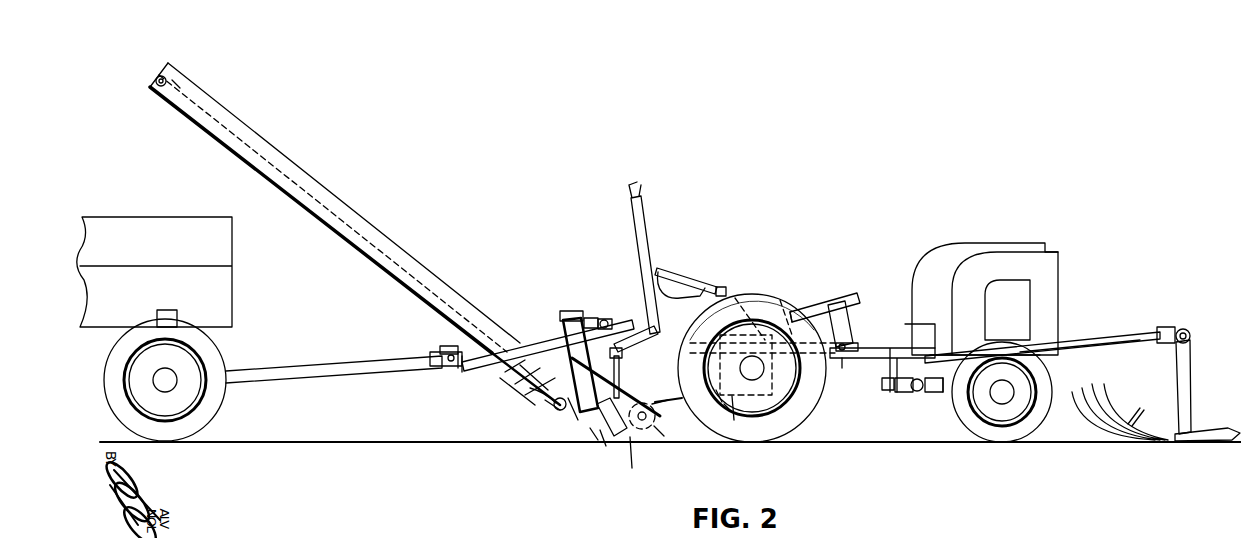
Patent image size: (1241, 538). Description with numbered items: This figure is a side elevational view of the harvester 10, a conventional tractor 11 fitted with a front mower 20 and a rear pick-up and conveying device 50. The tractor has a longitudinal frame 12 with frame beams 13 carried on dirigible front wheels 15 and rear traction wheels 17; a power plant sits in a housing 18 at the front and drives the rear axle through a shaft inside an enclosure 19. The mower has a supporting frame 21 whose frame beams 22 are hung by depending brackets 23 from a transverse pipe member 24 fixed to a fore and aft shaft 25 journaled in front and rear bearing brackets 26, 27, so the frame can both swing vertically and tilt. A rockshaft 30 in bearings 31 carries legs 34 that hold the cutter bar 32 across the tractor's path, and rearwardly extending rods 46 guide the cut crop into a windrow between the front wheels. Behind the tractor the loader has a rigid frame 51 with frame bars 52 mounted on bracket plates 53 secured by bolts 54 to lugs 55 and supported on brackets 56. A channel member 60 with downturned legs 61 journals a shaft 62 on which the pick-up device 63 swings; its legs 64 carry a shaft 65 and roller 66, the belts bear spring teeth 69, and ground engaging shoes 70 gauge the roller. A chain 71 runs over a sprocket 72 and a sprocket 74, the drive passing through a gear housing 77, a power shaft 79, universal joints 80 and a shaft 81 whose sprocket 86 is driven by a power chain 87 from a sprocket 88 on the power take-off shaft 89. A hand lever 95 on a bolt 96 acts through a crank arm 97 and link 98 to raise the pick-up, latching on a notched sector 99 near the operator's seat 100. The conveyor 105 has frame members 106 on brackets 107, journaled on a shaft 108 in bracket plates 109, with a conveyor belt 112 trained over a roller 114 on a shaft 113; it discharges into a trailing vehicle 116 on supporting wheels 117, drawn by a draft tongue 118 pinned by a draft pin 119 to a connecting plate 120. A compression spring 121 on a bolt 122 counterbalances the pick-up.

The harvester 10 is at (1080, 219).
The tractor 11 is at (969, 232).
The frame 12 is at (886, 349).
The frame beams 13 is at (842, 368).
The front wheels 15 is at (986, 438).
The traction wheels 17 is at (784, 436).
The housing 18 is at (976, 277).
The enclosure 19 is at (904, 326).
The mower 20 is at (1194, 325).
The supporting frame 21 is at (1139, 327).
The frame beams 22 is at (1095, 344).
The depending brackets 23 is at (904, 392).
The pipe member 24 is at (917, 392).
The shaft 25 is at (930, 392).
The front bearing bracket 26 is at (942, 394).
The rear bearing bracket 27 is at (890, 390).
The rockshaft 30 is at (1196, 337).
The bearings 31 is at (1172, 328).
The cutter bar 32 is at (1196, 438).
The legs 34 is at (1190, 389).
The rods 46 is at (1122, 422).
The pick-up and conveying device 50 is at (571, 265).
The rigid frame 51 is at (843, 294).
The frame bars 52 is at (806, 314).
The bracket plates 53 is at (852, 312).
The bolts 54 is at (858, 347).
The lugs 55 is at (822, 338).
The brackets 56 is at (781, 300).
The channel member 60 is at (562, 344).
The supporting legs 61 is at (528, 382).
The shaft 62 is at (556, 405).
The pick-up device 63 is at (646, 390).
The legs 64 is at (622, 440).
The shaft 65 is at (666, 416).
The roller 66 is at (640, 432).
The spring teeth 69 is at (654, 404).
The ground engaging shoes 70 is at (633, 470).
The power transmitting chain 71 is at (563, 326).
The sprocket 72 is at (546, 394).
The sprocket 74 is at (588, 318).
The gear housing 77 is at (569, 315).
The power shaft 79 is at (602, 321).
The universal joints 80 is at (603, 318).
The shaft 81 is at (719, 292).
The sprocket 86 is at (742, 298).
The power chain 87 is at (720, 404).
The sprocket 88 is at (732, 412).
The power take-off shaft 89 is at (734, 420).
The hand lever 95 is at (645, 232).
The bolt 96 is at (624, 338).
The crank arm 97 is at (620, 372).
The link 98 is at (611, 356).
The notched sector 99 is at (670, 294).
The operator's seat 100 is at (692, 284).
The conveyor 105 is at (358, 212).
The frame members 106 is at (294, 168).
The brackets 107 is at (452, 350).
The shaft 108 is at (556, 410).
The bracket plates 109 is at (576, 418).
The conveyor belt 112 is at (396, 258).
The shaft 113 is at (158, 78).
The roller 114 is at (178, 84).
The trailing vehicle 116 is at (228, 298).
The supporting wheels 117 is at (212, 356).
The draft tongue 118 is at (292, 374).
The draft pin 119 is at (445, 366).
The connecting plate 120 is at (458, 370).
The compression spring 121 is at (594, 436).
The bolt 122 is at (604, 448).